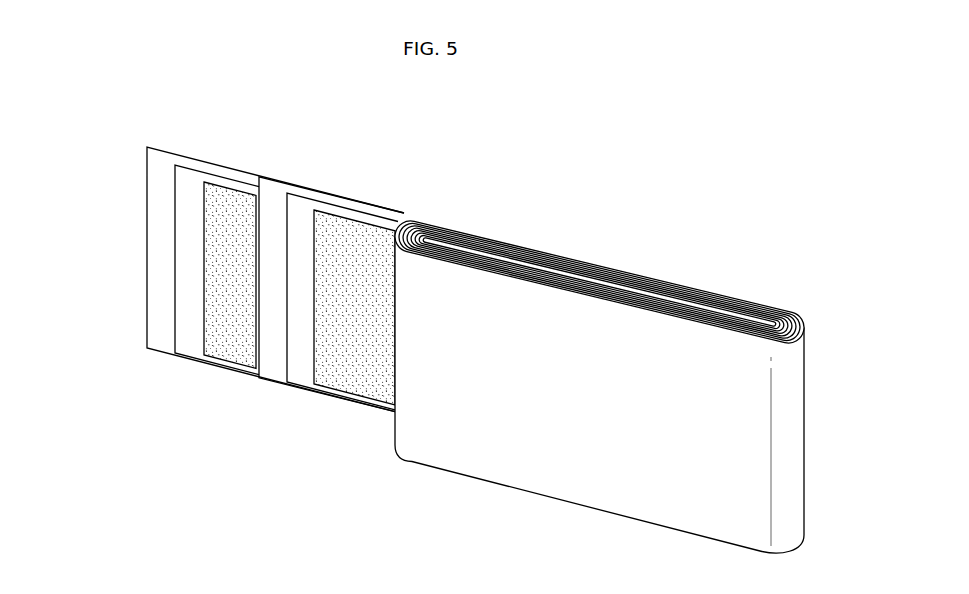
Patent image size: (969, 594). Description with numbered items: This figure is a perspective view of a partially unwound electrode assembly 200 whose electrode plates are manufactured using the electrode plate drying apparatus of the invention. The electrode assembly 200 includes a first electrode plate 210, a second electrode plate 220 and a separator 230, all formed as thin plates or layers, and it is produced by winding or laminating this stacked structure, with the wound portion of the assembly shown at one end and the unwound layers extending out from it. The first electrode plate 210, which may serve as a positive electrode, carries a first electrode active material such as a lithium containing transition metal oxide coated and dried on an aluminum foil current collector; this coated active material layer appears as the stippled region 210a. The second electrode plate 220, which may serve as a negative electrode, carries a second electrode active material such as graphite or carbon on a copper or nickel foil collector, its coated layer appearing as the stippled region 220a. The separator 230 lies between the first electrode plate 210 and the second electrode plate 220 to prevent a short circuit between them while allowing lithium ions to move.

The electrode assembly 200 is at (634, 226).
The first electrode plate 210 is at (298, 192).
The first active material layer 210a is at (322, 290).
The second electrode plate 220 is at (217, 177).
The second active material layer 220a is at (217, 215).
The separator 230 is at (163, 340).